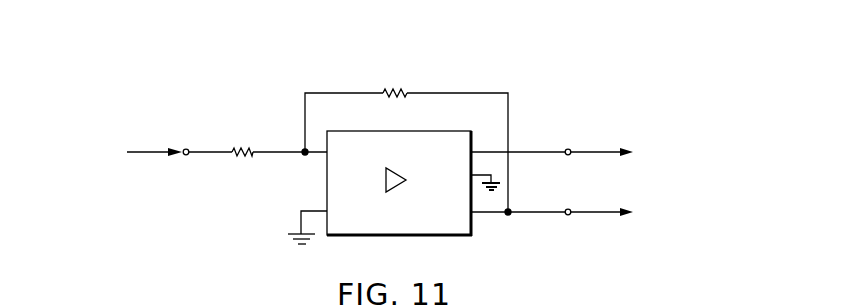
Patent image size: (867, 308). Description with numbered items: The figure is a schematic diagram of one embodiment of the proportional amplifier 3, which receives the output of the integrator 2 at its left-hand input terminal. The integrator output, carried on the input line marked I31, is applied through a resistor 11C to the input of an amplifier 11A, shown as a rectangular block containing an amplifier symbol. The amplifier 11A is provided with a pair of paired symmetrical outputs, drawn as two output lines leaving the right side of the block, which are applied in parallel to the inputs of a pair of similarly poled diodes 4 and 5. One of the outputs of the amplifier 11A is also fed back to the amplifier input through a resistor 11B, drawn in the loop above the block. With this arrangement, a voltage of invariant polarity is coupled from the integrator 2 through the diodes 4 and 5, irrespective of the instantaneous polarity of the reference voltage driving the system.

The integrator 2 is at (110, 153).
The proportional amplifier 3 is at (532, 98).
The diode 4 is at (515, 150).
The diode 5 is at (521, 210).
The amplifier 11A is at (402, 237).
The resistor 11B is at (396, 86).
The resistor 11C is at (237, 147).
The input signal I31 is at (205, 150).